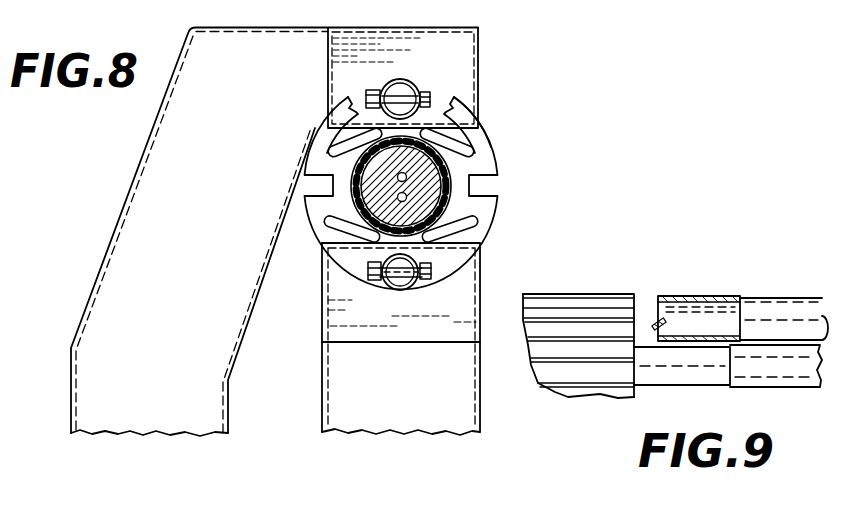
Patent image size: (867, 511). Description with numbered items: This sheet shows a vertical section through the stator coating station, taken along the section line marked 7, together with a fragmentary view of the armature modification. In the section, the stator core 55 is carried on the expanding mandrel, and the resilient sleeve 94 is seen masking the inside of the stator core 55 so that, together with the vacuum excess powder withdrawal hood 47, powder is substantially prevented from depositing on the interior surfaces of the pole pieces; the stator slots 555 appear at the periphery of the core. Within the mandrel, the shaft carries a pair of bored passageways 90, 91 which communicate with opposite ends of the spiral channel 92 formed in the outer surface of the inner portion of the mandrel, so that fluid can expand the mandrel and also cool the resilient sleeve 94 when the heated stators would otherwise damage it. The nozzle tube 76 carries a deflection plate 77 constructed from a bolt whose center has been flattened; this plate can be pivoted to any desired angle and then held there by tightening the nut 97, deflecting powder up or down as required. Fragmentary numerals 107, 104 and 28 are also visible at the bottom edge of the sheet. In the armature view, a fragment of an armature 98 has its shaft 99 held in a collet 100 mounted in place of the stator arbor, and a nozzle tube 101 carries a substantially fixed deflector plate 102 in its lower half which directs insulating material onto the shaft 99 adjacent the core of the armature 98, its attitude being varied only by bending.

In FIG. 8, the section line 7- 7 is at (400, 97).
In FIG. 8, the powder removal hood 47 is at (466, 52).
In FIG. 8, the stator core 55 is at (495, 207).
In FIG. 8, the clamp slot 555 is at (466, 143).
In FIG. 8, the resilient sleeve 94 is at (492, 146).
In FIG. 8, the spiral channel 92 is at (358, 168).
In FIG. 8, the bored passageway 90 is at (398, 179).
In FIG. 8, the bored passageway 91 is at (407, 200).
In FIG. 8, the nozzle tube 76 is at (412, 88).
In FIG. 8, the deflection plate 77 is at (398, 93).
In FIG. 8, the nut 97 is at (371, 93).
In FIG. 8, the element 107 is at (146, 510).
In FIG. 8, the element 104 is at (244, 508).
In FIG. 8, the element 28 is at (372, 510).
In FIG. 9, the armature 98 is at (582, 293).
In FIG. 9, the shaft 99 is at (673, 372).
In FIG. 9, the collet 100 is at (767, 383).
In FIG. 9, the nozzle tube 101 is at (708, 297).
In FIG. 9, the deflector plate 102 is at (655, 318).